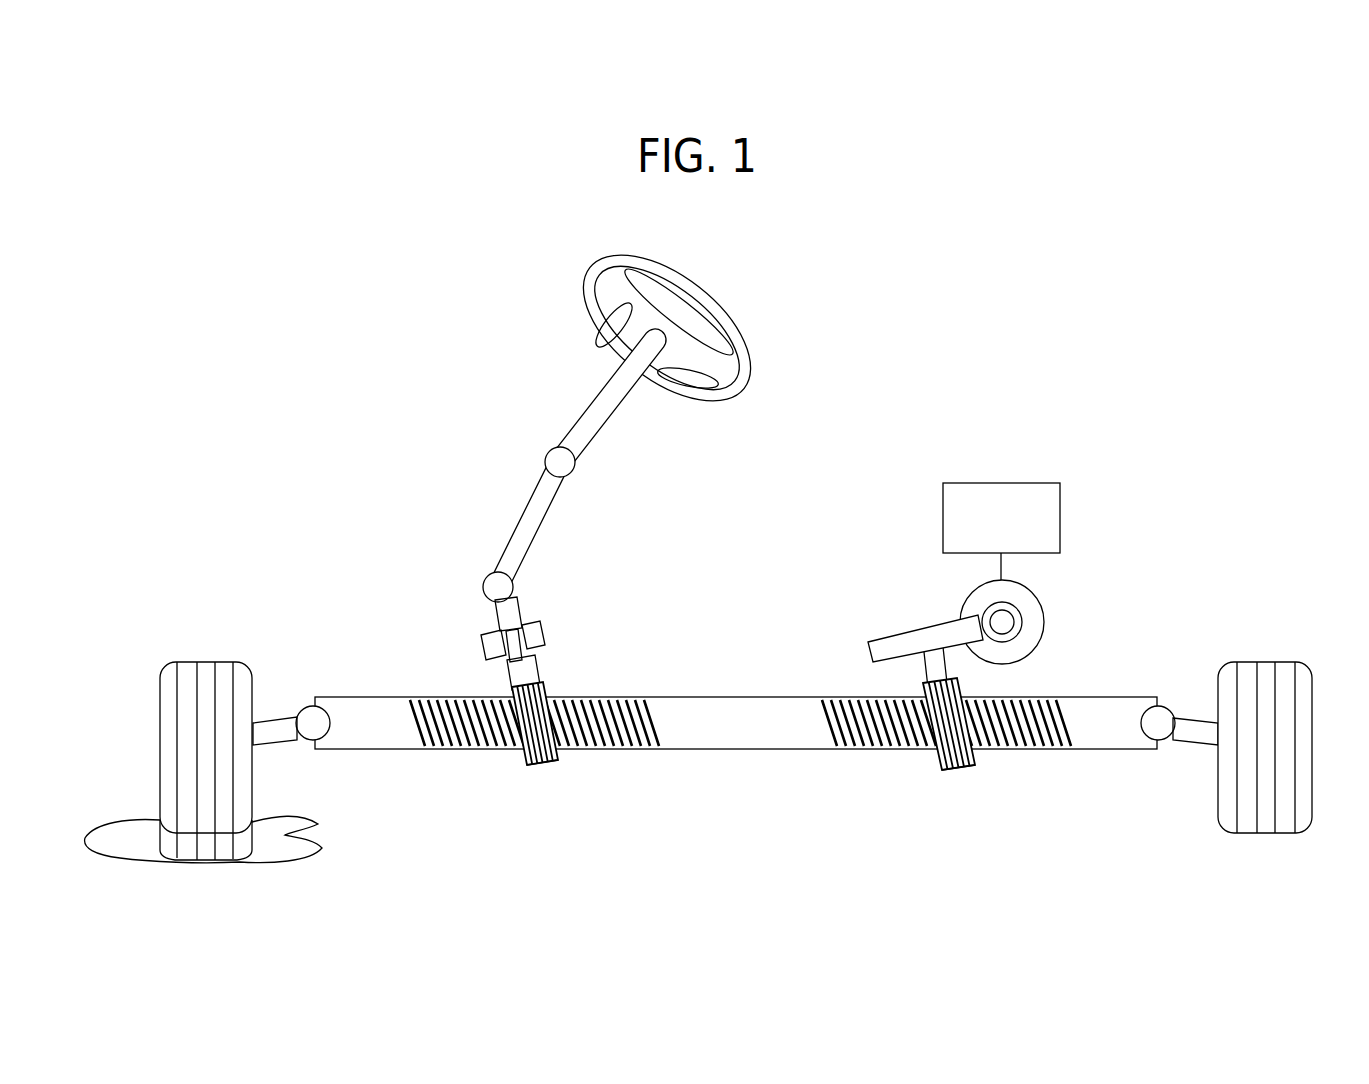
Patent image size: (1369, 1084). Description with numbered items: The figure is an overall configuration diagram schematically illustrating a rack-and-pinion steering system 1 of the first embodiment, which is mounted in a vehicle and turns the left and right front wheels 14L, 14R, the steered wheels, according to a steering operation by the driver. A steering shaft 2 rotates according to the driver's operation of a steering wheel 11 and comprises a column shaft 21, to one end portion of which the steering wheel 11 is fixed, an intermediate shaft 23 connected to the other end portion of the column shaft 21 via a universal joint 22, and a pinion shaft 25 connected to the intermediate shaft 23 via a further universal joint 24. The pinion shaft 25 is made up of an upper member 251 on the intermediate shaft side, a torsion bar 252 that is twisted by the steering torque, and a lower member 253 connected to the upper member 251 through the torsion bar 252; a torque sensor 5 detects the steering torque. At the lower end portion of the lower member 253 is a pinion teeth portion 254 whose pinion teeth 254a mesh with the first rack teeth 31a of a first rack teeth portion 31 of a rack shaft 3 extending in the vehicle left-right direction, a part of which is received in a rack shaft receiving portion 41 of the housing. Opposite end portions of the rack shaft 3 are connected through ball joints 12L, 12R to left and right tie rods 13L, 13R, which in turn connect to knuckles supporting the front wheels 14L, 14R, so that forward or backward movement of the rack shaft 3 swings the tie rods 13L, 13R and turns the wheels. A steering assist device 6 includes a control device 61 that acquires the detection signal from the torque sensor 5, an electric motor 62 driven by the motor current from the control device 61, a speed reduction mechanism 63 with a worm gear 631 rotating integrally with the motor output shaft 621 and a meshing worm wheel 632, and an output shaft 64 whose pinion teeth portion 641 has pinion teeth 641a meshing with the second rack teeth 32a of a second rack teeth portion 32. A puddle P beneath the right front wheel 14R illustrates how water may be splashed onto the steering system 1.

The steering system 1 is at (497, 332).
The steering wheel 11 is at (707, 277).
The steering shaft 2 is at (660, 447).
The column shaft 21 is at (598, 440).
The universal joint 22 is at (575, 468).
The intermediate shaft 23 is at (548, 508).
The universal joint 24 is at (512, 580).
The pinion shaft 25 is at (614, 560).
The upper member 251 is at (513, 600).
The torsion bar 252 is at (522, 618).
The lower member 253 is at (520, 668).
The pinion teeth portion 254 is at (545, 770).
The pinion teeth 254a is at (531, 760).
The torque sensor 5 is at (483, 647).
The rack shaft 3 is at (745, 707).
The first rack teeth portion 31 is at (572, 762).
The first rack teeth 31a is at (632, 697).
The rack shaft receiving portion 41 is at (640, 750).
The second rack teeth portion 32 is at (905, 755).
The second rack teeth 32a is at (837, 745).
The ball joint 12R is at (302, 705).
The right tie rod 13R is at (280, 742).
The right front wheel 14R is at (208, 660).
The ball joint 12L is at (1165, 705).
The left tie rod 13L is at (1205, 742).
The left front wheel 14L is at (1270, 660).
The puddle P is at (112, 838).
The steering assist device 6 is at (1093, 478).
The control device 61 is at (1008, 483).
The electric motor 62 is at (1043, 612).
The output shaft 621 is at (1010, 622).
The speed reduction mechanism 63 is at (875, 560).
The worm gear 631 is at (985, 608).
The worm wheel 632 is at (942, 623).
The output shaft 64 is at (948, 664).
The pinion teeth portion 641 is at (953, 775).
The pinion teeth 641a is at (979, 762).